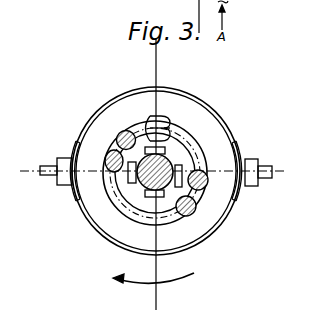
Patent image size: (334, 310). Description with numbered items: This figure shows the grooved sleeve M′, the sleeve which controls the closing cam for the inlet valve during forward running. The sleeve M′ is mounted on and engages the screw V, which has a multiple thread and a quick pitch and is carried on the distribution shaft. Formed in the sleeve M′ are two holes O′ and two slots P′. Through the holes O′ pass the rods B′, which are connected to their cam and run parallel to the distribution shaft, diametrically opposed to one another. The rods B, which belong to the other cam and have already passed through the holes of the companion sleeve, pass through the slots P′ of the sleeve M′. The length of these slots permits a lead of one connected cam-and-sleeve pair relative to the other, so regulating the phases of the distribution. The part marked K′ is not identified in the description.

The casing K′ is at (112, 99).
The grooved sleeve M′ is at (123, 108).
The holes O′ is at (115, 131).
The slots P′ is at (152, 131).
The rods B′ is at (117, 139).
The rods B is at (105, 159).
The screw V is at (73, 188).